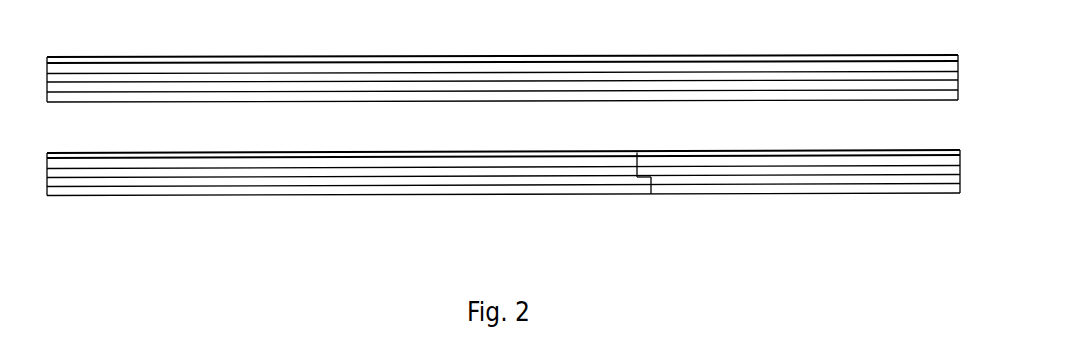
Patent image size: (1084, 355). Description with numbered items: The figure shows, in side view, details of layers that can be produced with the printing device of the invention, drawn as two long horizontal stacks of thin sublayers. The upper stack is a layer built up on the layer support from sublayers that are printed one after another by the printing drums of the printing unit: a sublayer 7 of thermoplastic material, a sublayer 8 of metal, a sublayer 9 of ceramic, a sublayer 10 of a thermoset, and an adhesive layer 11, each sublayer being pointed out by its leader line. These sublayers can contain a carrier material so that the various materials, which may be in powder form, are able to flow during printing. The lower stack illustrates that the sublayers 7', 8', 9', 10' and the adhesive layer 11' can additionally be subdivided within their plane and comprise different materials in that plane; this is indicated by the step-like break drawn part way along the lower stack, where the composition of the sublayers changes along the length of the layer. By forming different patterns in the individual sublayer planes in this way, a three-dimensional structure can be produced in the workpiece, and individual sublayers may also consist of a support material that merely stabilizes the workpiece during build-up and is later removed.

The sublayer of thermoplastic material 7 is at (502, 121).
The sublayer of metal 8 is at (502, 116).
The sublayer of ceramic 9 is at (502, 108).
The sublayer of a thermoset 10 is at (502, 55).
The adhesive layer 11 is at (502, 36).
The subdivided sublayer 7' is at (503, 220).
The subdivided sublayer 8' is at (503, 216).
The subdivided sublayer 9' is at (503, 201).
The subdivided sublayer 10' is at (503, 201).
The adhesive layer of subdivided layer 11' is at (503, 199).